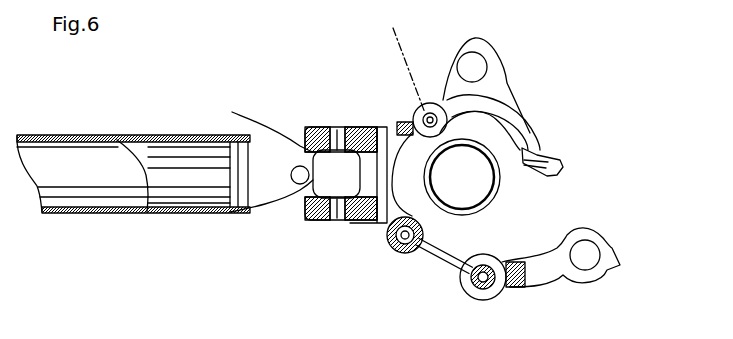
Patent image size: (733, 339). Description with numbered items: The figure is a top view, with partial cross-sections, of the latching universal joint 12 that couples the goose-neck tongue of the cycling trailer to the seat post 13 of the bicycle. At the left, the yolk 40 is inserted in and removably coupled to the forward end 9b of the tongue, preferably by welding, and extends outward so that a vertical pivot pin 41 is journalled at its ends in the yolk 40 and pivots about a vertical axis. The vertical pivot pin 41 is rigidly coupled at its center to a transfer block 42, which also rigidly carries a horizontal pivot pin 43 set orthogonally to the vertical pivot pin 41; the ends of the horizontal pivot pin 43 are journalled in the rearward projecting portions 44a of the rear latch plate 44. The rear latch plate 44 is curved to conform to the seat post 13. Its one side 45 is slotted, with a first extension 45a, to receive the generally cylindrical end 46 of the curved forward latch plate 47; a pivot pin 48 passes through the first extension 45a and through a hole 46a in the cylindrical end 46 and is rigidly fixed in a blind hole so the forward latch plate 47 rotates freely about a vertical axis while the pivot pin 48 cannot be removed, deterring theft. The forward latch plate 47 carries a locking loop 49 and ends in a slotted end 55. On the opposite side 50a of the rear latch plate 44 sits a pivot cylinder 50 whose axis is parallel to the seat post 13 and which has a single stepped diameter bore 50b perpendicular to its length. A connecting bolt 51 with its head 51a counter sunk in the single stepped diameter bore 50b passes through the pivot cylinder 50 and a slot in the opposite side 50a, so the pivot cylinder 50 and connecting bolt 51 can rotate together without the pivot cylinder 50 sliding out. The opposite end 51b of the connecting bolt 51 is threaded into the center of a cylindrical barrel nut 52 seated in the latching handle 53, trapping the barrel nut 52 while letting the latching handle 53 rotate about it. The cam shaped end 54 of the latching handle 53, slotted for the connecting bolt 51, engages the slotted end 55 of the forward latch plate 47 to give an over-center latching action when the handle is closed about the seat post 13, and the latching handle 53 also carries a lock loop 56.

The forward end 9b is at (77, 137).
The latching universal joint 12 is at (327, 33).
The seat post 13 is at (503, 192).
The yolk 40 is at (257, 205).
The vertical pivot pin 41 is at (250, 122).
The transfer block 42 is at (302, 165).
The horizontal pivot pin 43 is at (328, 225).
The rear latch plate 44 is at (375, 218).
The rearward projecting portions 44a is at (315, 133).
The one side 45 is at (393, 120).
The first extension 45a is at (447, 133).
The cylindrical end 46 is at (428, 112).
The hole 46a is at (397, 59).
The forward latch plate 47 is at (517, 120).
The pivot pin 48 is at (410, 107).
The locking loop 49 is at (487, 57).
The pivot cylinder 50 is at (410, 253).
The opposite side 50a is at (413, 237).
The single stepped diameter bore 50b is at (427, 183).
The connecting bolt 51 is at (435, 263).
The head 51a is at (410, 253).
The opposite end 51b is at (487, 283).
The cylindrical barrel nut 52 is at (477, 293).
The latching handle 53 is at (544, 282).
The cam shaped end 54 is at (478, 253).
The slotted end 55 is at (557, 165).
The lock loop 56 is at (607, 270).